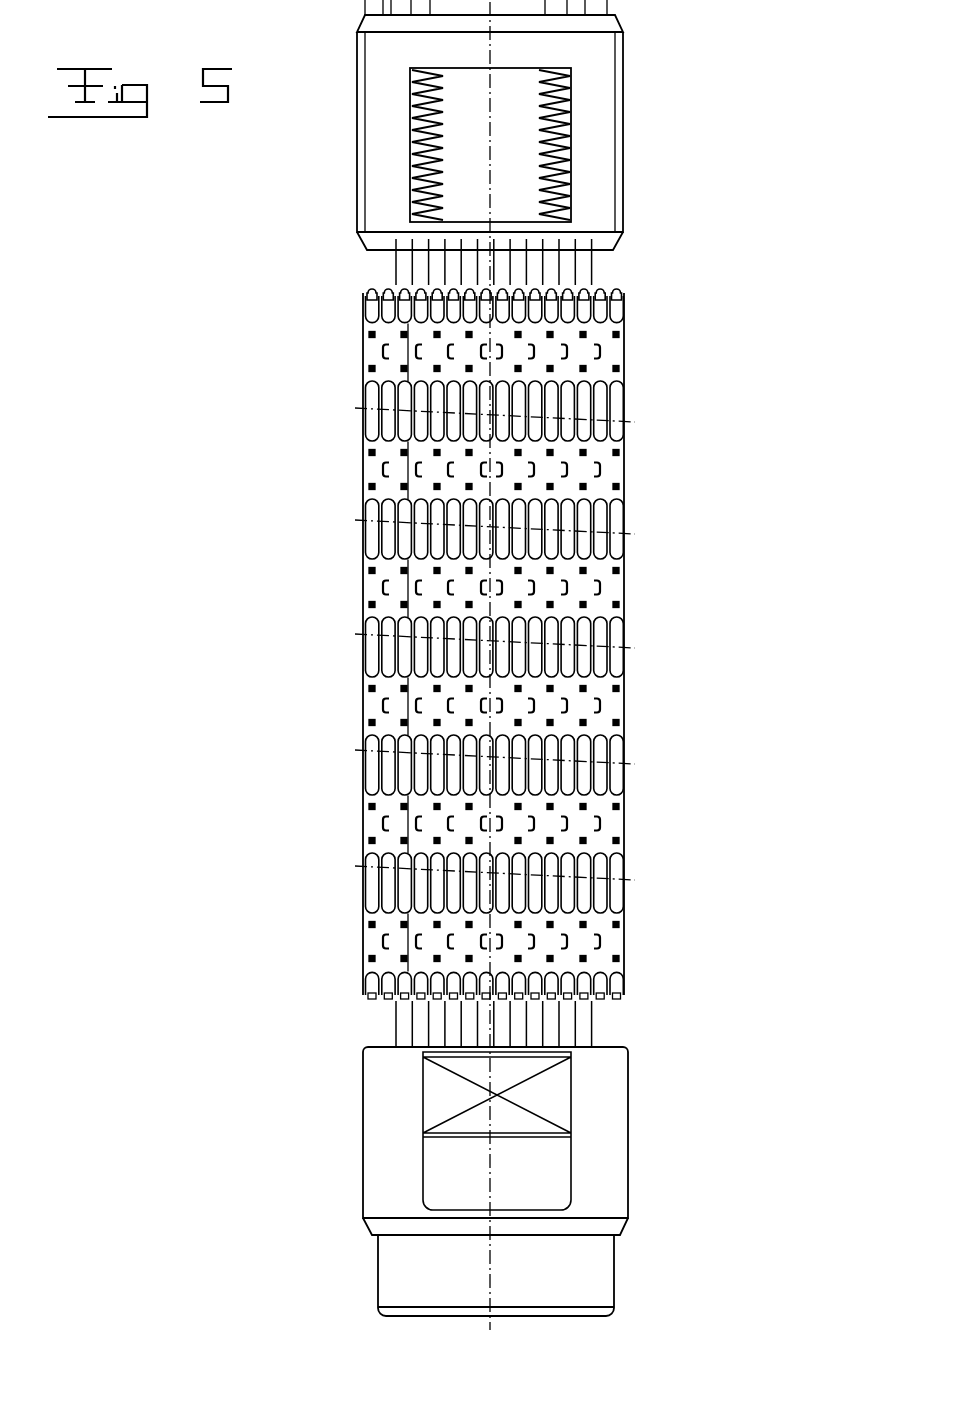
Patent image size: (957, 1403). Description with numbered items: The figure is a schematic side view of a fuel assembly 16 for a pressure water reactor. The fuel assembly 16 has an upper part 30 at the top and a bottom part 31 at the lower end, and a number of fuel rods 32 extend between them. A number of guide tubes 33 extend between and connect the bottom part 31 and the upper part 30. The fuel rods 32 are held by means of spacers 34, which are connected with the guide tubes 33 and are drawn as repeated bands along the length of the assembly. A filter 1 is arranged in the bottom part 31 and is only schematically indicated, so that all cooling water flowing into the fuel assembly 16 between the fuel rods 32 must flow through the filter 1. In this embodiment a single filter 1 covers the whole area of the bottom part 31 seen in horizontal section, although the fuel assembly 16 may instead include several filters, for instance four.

The filter 1 is at (450, 1095).
The fuel assembly 16 is at (405, 644).
The upper part 30 is at (378, 170).
The bottom part 31 is at (443, 1181).
The fuel rods 32 is at (382, 556).
The guide tubes 33 is at (405, 271).
The spacers 34 is at (365, 810).